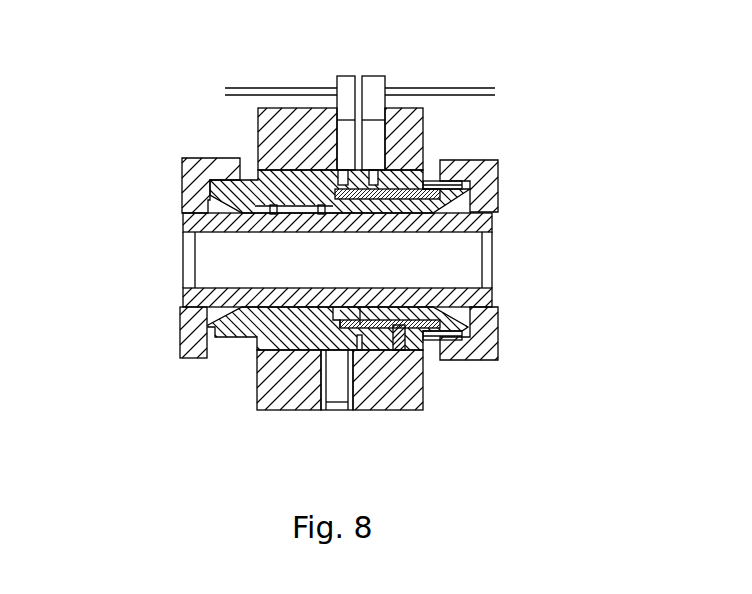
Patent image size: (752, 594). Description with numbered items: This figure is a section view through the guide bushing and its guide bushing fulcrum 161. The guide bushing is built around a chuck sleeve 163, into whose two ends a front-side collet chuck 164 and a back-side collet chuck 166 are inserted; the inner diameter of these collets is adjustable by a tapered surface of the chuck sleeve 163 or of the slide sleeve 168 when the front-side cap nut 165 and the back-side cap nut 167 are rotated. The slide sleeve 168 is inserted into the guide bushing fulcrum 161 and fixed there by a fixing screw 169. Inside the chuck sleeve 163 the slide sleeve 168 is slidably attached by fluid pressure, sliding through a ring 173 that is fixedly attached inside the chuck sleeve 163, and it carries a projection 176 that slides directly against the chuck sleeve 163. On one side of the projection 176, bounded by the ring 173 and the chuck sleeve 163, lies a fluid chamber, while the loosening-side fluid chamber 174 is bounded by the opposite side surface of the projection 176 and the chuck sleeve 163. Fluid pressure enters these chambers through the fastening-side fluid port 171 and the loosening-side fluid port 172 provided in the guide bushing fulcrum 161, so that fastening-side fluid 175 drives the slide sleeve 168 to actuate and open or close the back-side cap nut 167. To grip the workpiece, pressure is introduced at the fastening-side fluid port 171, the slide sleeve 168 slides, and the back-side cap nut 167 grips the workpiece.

The guide bushing fulcrum 161 is at (283, 138).
The chuck sleeve 163 is at (267, 327).
The front-side collet chuck 164 is at (193, 221).
The front-side cap nut 165 is at (193, 173).
The back-side collet chuck 166 is at (426, 228).
The back-side cap nut 167 is at (487, 172).
The slide sleeve 168 is at (393, 318).
The fixing screw 169 is at (338, 392).
The fastening-side fluid port 171 is at (345, 130).
The loosening-side fluid port 172 is at (373, 132).
The ring 173 is at (440, 186).
The loosening-side fluid chamber 174 is at (378, 190).
The fastening-side fluid 175 is at (338, 188).
The projection 176 is at (355, 333).